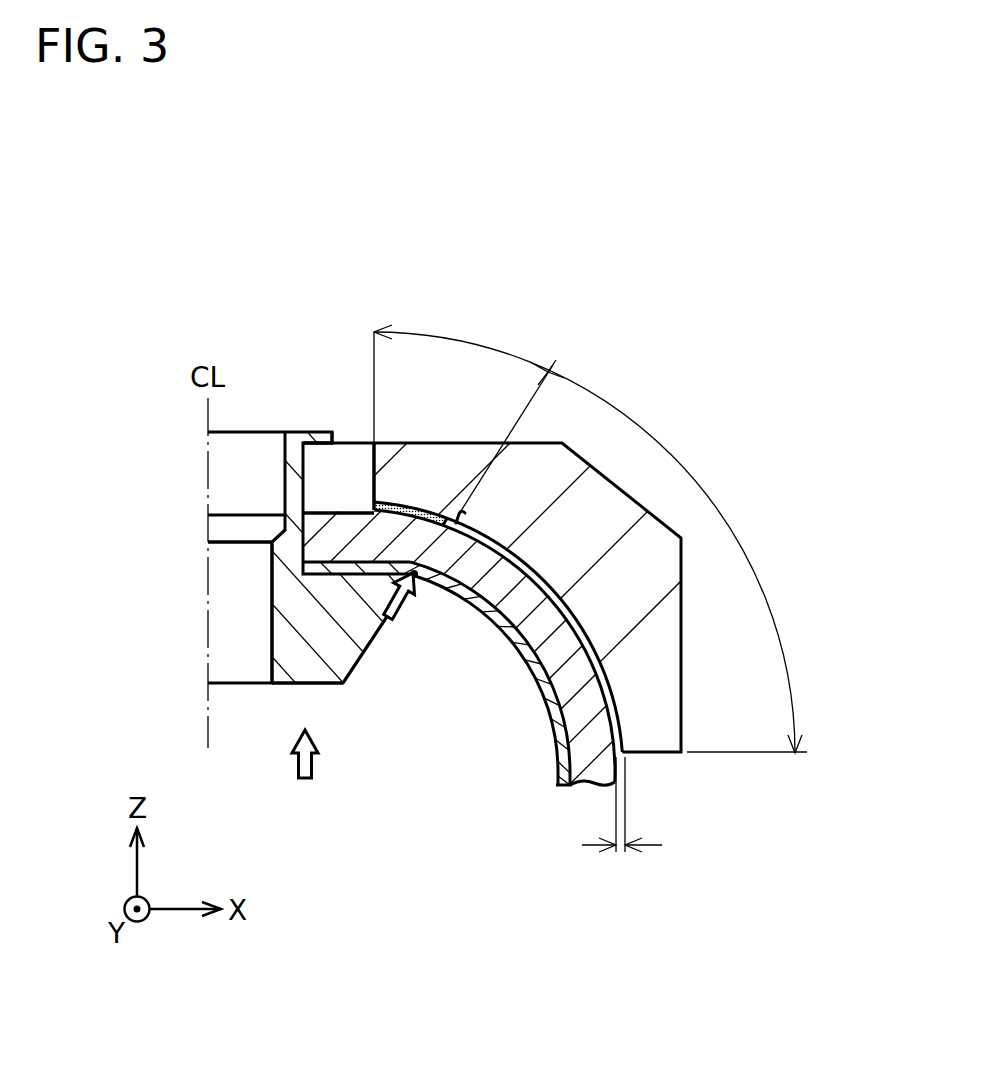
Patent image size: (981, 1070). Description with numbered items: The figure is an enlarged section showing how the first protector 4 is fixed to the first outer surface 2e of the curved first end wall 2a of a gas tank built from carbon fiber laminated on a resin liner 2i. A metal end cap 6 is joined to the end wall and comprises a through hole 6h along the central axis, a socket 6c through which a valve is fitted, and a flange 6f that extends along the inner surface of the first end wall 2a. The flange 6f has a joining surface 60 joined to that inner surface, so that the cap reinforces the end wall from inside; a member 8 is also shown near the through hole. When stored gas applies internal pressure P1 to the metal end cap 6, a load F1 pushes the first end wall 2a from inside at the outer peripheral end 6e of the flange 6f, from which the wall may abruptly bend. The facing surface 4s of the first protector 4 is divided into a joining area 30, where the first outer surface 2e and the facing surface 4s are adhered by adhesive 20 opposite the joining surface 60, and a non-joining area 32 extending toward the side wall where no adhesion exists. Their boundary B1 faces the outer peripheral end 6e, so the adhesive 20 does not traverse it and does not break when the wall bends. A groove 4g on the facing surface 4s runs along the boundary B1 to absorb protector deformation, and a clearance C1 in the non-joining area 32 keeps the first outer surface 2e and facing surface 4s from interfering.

The first protector 4 is at (668, 652).
The facing surface 4s is at (585, 688).
The groove 4g is at (462, 517).
The adhesive 20 is at (418, 503).
The first outer surface 2e is at (620, 720).
The resin liner 2i is at (567, 755).
The first end wall 2a is at (603, 738).
The metal end cap 6 is at (290, 420).
The socket 6c is at (317, 432).
The outer peripheral end 6e is at (415, 578).
The through hole 6h is at (270, 582).
The flange 6f is at (282, 643).
The seal member 8 is at (233, 523).
The joining surface 60 is at (357, 566).
The load F1 is at (392, 589).
The internal pressure P1 is at (313, 765).
The boundary B1 is at (443, 530).
The joining area 30 is at (504, 410).
The non-joining area 32 is at (590, 539).
The clearance C1 is at (622, 820).